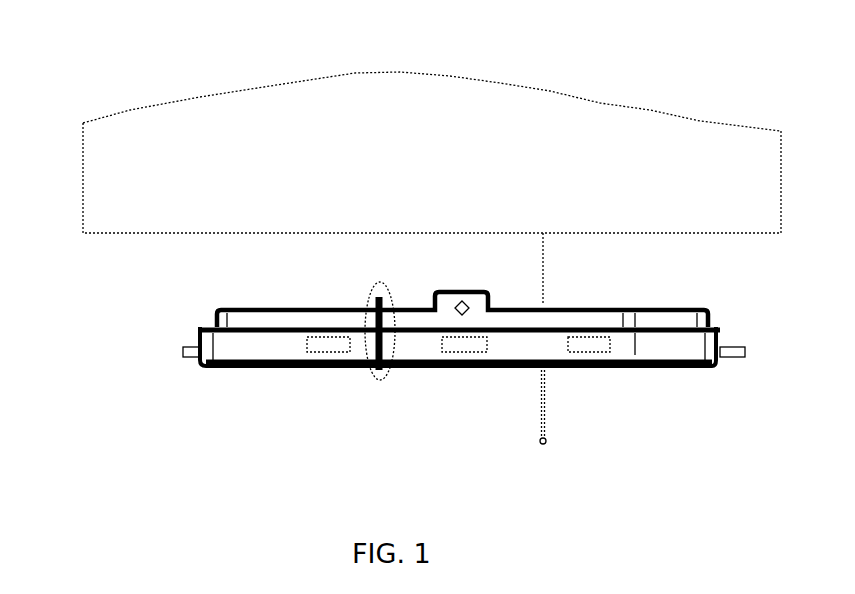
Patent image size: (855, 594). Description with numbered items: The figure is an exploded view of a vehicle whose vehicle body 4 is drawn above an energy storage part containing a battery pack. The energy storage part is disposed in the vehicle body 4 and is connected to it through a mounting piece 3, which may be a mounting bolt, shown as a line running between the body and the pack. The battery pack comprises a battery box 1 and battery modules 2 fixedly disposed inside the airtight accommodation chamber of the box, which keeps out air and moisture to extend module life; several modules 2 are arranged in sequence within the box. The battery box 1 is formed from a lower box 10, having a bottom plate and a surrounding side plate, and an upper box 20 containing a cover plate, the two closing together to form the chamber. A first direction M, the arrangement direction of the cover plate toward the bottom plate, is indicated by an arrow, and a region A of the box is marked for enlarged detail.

The battery box 1 is at (112, 281).
The battery module 2 is at (322, 369).
The mounting piece 3 is at (540, 433).
The vehicle body 4 is at (225, 155).
The lower box 10 is at (200, 367).
The upper box 20 is at (205, 312).
The detail region A is at (386, 382).
The first direction M is at (43, 395).